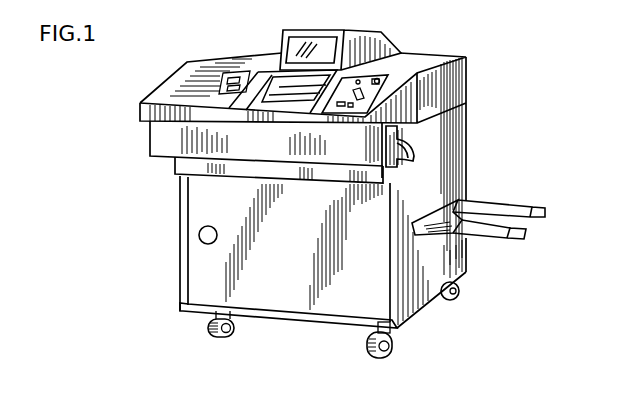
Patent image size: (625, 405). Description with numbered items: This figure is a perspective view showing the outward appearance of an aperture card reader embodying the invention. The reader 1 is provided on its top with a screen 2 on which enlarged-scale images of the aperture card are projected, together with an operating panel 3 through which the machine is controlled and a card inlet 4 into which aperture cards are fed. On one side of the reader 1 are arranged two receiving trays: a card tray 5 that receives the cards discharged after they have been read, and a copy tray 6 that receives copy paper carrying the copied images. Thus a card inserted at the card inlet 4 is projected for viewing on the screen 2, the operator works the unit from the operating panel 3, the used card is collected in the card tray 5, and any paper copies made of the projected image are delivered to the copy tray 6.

The reader 1 is at (172, 236).
The screen 2 is at (298, 42).
The operating panel 3 is at (380, 83).
The card inlet 4 is at (272, 90).
The card tray 5 is at (410, 160).
The copy tray 6 is at (450, 232).